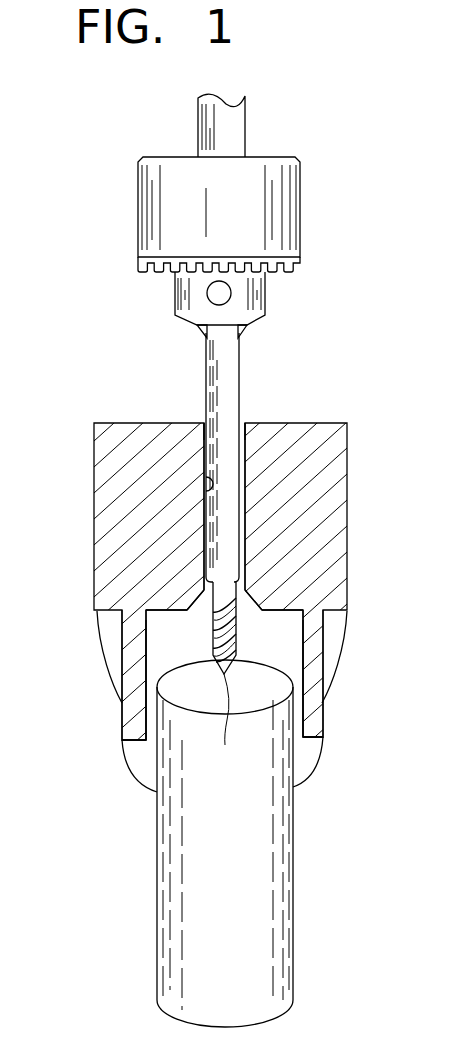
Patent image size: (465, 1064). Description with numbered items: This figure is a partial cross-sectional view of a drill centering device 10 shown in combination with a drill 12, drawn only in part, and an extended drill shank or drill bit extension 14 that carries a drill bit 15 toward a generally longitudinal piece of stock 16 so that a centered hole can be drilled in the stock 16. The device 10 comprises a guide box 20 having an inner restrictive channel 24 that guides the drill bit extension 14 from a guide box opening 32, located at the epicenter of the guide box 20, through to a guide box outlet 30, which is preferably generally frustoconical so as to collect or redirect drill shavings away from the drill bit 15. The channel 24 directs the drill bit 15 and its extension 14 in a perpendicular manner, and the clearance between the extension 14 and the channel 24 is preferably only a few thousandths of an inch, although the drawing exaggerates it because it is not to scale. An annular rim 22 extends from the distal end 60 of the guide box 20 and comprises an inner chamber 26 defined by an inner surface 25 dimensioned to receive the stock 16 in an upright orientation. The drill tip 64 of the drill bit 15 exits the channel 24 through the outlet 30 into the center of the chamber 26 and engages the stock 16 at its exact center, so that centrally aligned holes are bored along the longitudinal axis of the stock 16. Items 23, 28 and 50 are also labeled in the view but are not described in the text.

The drill centering device 10 is at (353, 195).
The drill 12 is at (283, 238).
The drill bit extension 14 is at (228, 377).
The drill bit 15 is at (234, 642).
The stock 16 is at (273, 870).
The guide box 20 is at (333, 495).
The annular rim 22 is at (316, 639).
The notch 23 is at (206, 484).
The inner restrictive channel 24 is at (204, 445).
The inner surface 25 is at (141, 676).
The inner chamber 26 is at (157, 645).
The retaining collar 28 is at (308, 768).
The guide box outlet 30 is at (198, 598).
The guide box opening 32 is at (200, 410).
The shoulder 50 is at (316, 745).
The distal end 60 is at (343, 623).
The drill tip 64 is at (227, 725).